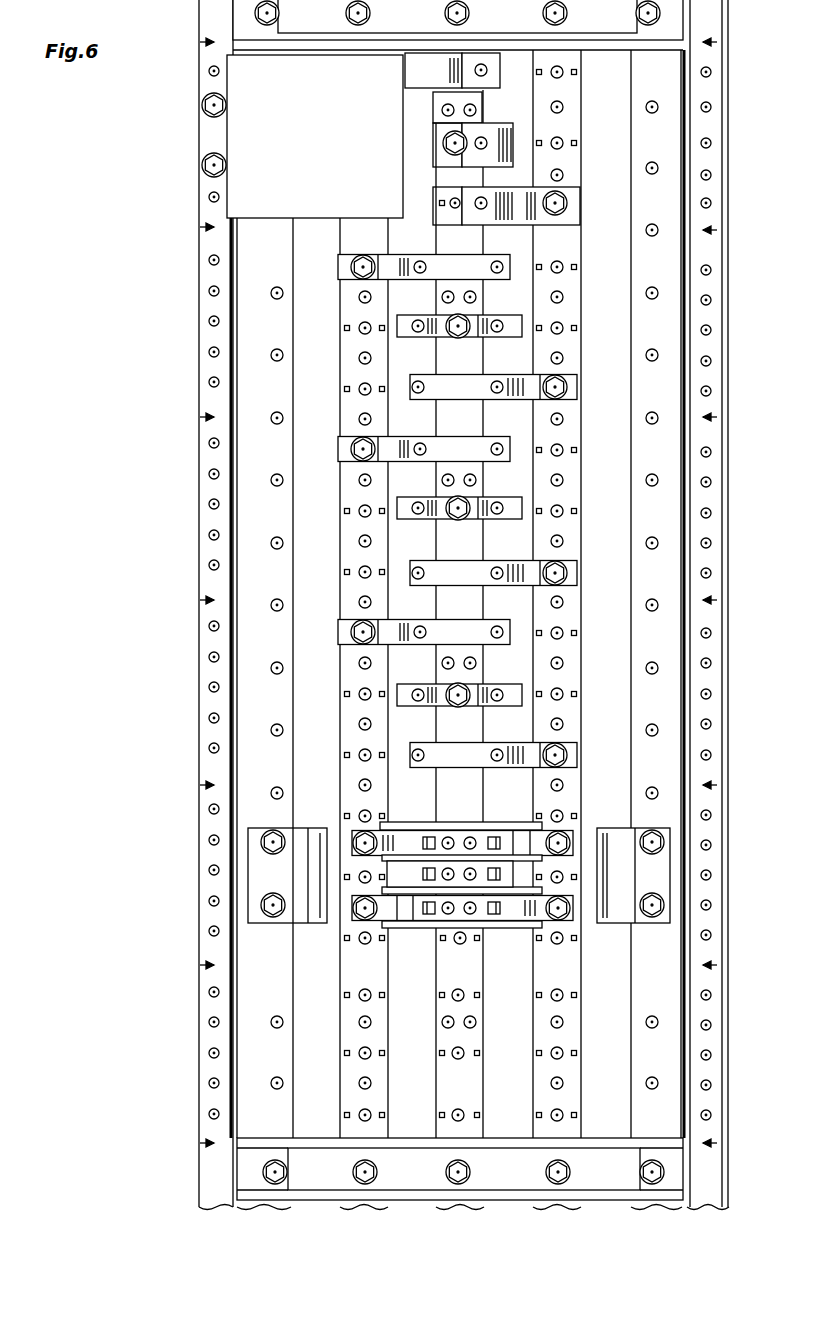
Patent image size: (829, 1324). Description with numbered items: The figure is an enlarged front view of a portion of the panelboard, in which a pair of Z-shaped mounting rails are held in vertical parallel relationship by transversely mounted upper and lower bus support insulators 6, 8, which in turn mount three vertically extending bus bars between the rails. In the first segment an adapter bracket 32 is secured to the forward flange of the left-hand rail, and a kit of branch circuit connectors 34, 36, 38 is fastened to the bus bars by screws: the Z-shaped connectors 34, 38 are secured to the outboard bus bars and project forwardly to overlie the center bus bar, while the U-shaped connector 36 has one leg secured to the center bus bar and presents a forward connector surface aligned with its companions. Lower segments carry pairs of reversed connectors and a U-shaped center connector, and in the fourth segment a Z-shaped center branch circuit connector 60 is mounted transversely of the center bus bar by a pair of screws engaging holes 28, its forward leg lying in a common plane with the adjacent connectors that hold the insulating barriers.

The upper bus support insulator 6 is at (607, 27).
The lower bus support insulator 8 is at (326, 1184).
The holes 28 is at (470, 1028).
The adapter bracket 32 is at (298, 142).
The branch circuit connector 34 is at (489, 84).
The branch circuit connector 36 is at (447, 165).
The branch circuit connector 38 is at (460, 215).
The branch circuit connector 60 is at (479, 862).